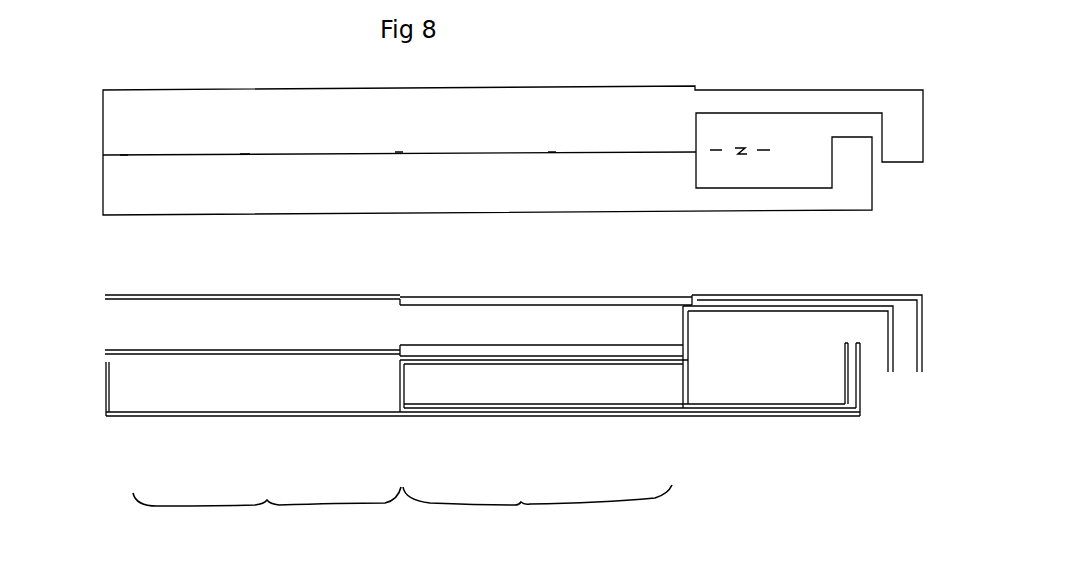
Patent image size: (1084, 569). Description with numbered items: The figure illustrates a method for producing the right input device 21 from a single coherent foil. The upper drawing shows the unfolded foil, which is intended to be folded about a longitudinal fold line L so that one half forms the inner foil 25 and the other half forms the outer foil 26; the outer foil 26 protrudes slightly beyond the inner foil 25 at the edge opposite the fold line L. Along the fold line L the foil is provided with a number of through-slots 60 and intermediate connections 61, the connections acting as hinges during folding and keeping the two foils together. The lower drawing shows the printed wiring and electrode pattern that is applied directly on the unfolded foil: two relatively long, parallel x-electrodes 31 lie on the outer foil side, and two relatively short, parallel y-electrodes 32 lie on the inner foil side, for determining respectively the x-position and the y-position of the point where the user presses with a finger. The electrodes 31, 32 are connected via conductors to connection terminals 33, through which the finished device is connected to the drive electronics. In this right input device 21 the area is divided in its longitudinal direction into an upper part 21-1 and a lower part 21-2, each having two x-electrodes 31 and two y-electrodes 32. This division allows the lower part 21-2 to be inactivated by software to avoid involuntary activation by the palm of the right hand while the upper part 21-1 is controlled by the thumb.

The right input device 21 is at (584, 59).
The upper part 21-1 is at (537, 511).
The lower part 21-2 is at (267, 512).
The inner foil 25 is at (184, 213).
The outer foil 26 is at (185, 93).
The x-electrodes 31 is at (248, 295).
The y-electrodes 32 is at (110, 388).
The connection terminals 33 is at (846, 345).
The through-slots 60 is at (180, 155).
The intermediate connections 61 is at (124, 155).
The fold line L is at (740, 165).